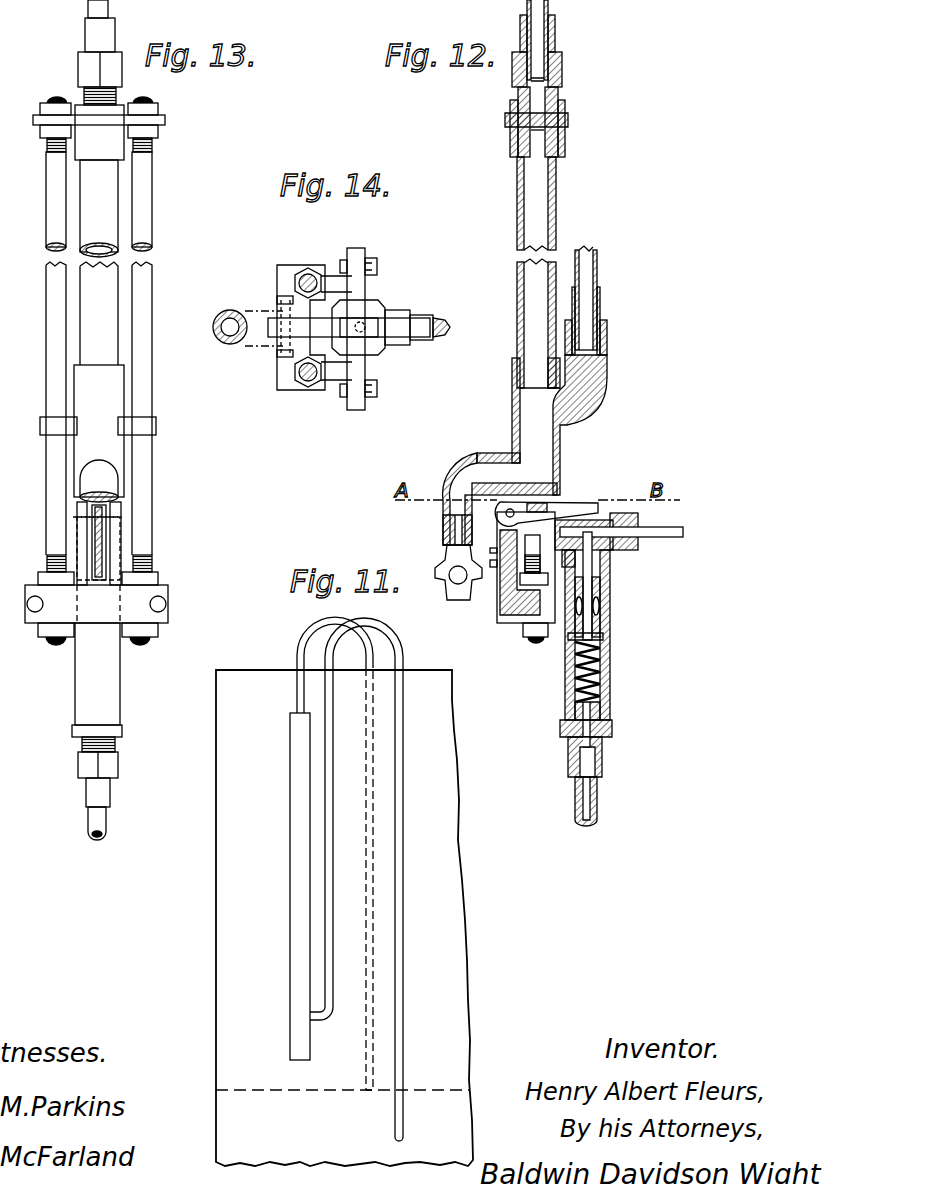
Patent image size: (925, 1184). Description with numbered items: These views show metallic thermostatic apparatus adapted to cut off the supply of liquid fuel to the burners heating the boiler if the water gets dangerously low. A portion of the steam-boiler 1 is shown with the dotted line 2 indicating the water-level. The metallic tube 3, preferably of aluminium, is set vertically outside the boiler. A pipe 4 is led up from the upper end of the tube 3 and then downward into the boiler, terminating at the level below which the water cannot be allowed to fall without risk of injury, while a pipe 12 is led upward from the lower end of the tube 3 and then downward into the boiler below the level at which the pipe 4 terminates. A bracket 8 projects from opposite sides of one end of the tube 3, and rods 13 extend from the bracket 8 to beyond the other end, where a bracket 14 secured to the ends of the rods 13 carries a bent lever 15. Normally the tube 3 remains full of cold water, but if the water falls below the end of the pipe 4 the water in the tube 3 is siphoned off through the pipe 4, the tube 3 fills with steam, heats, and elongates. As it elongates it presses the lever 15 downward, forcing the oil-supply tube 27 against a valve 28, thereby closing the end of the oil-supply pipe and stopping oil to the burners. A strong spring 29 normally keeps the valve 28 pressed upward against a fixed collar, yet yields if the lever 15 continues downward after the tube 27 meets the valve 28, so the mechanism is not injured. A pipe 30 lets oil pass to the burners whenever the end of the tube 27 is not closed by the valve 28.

In FIG. 11, the steam-boiler 1 is at (226, 697).
In FIG. 11, the water-level 2 is at (226, 1090).
In FIG. 13, the metallic tube 3 is at (88, 188).
In FIG. 12, the metallic tube 3 is at (517, 175).
In FIG. 11, the metallic tube 3 is at (297, 890).
In FIG. 13, the pipe 4 is at (109, 9).
In FIG. 12, the pipe 4 is at (549, 12).
In FIG. 11, the pipe 4 is at (297, 648).
In FIG. 13, the bracket 8 is at (165, 120).
In FIG. 12, the bracket 8 is at (568, 119).
In FIG. 12, the pipe 12 is at (597, 262).
In FIG. 11, the pipe 12 is at (329, 807).
In FIG. 13, the rods 13 is at (143, 193).
In FIG. 14, the rods 13 is at (323, 256).
In FIG. 12, the rods 13 is at (512, 590).
In FIG. 13, the bracket 14 is at (112, 538).
In FIG. 14, the bracket 14 is at (282, 338).
In FIG. 12, the bracket 14 is at (516, 612).
In FIG. 13, the bent lever 15 is at (110, 515).
In FIG. 14, the bent lever 15 is at (345, 326).
In FIG. 12, the bent lever 15 is at (560, 510).
In FIG. 14, the oil-supply tube 27 is at (436, 338).
In FIG. 12, the oil-supply tube 27 is at (605, 603).
In FIG. 12, the valve 28 is at (605, 638).
In FIG. 12, the spring 29 is at (600, 684).
In FIG. 13, the pipe 30 is at (100, 818).
In FIG. 12, the pipe 30 is at (598, 813).